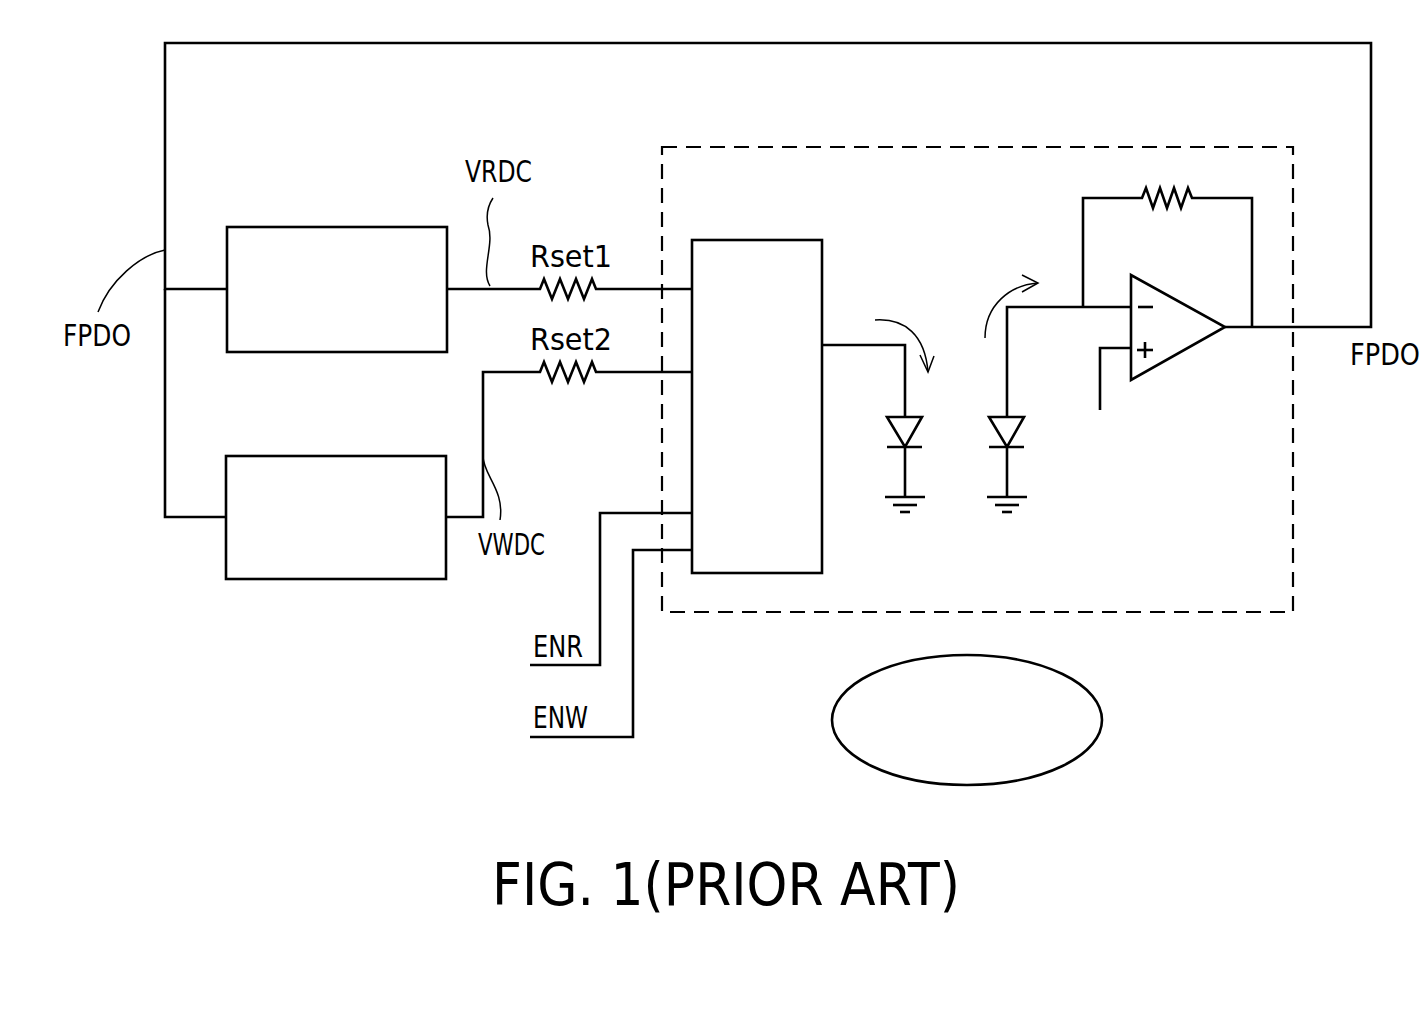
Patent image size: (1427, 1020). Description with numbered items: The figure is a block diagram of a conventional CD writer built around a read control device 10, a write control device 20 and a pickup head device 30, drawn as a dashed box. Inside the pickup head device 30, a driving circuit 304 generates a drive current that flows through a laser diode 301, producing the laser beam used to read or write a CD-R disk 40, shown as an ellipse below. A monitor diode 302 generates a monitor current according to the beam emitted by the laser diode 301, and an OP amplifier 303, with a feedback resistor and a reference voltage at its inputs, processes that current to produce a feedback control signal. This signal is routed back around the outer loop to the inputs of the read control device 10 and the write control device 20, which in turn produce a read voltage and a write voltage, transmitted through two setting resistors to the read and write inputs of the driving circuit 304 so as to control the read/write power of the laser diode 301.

The read control device 10 is at (333, 226).
The write control device 20 is at (333, 581).
The pickup head device 30 is at (977, 147).
The CD-R disk 40 is at (1103, 718).
The laser diode 301 is at (893, 432).
The monitor diode 302 is at (1018, 432).
The OP amplifier 303 is at (1177, 355).
The driving circuit 304 is at (752, 575).